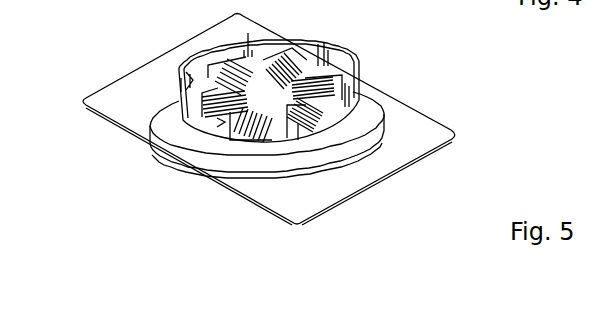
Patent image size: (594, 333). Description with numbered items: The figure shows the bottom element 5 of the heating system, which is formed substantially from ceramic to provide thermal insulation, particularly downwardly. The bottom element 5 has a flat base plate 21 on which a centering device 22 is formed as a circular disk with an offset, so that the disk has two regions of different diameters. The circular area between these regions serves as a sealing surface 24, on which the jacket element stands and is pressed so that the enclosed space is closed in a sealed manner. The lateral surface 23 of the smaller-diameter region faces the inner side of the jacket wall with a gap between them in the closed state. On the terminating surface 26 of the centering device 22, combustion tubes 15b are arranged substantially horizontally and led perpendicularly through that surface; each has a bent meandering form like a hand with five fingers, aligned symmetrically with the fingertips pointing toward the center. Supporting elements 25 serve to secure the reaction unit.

The bottom element 5 is at (452, 88).
The combustion tubes 15b is at (250, 126).
The base plate 21 is at (410, 142).
The centering device 22 is at (372, 75).
The lateral surface 23 is at (323, 137).
The sealing surface 24 is at (253, 163).
The supporting elements 25 is at (188, 72).
The terminating surface 26 is at (177, 83).